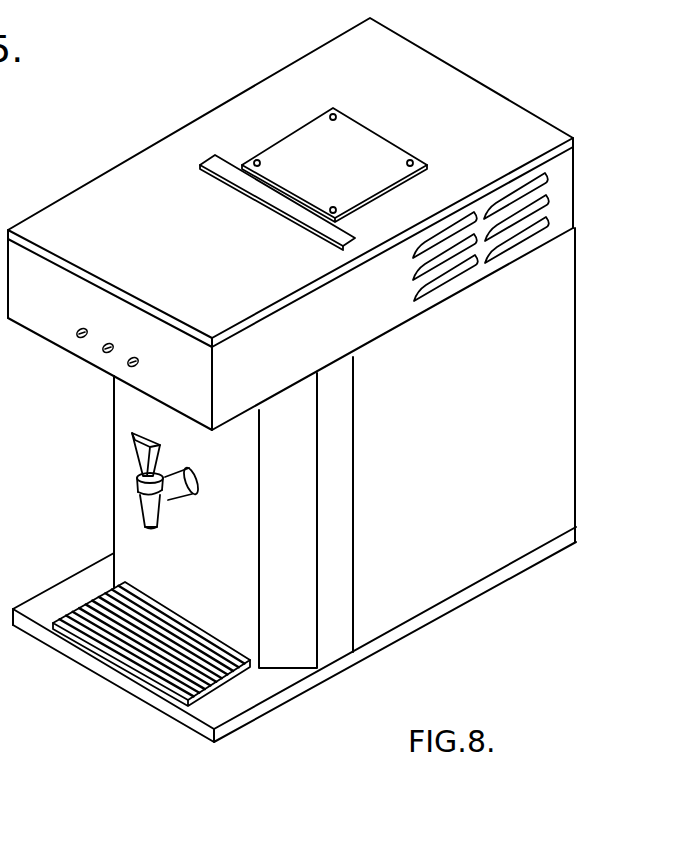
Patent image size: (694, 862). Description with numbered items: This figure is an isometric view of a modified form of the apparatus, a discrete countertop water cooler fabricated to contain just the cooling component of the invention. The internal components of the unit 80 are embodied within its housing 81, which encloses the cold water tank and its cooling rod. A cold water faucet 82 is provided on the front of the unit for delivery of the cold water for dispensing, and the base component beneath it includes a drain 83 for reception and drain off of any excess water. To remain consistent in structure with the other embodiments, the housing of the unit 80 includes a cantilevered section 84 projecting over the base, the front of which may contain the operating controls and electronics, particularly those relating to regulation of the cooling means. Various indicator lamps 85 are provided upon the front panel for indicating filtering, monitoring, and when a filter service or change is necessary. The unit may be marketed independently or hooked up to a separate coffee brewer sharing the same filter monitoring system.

The unit 80 is at (558, 126).
The housing 81 is at (540, 316).
The cold water faucet 82 is at (160, 508).
The drain 83 is at (130, 637).
The cantilevered section 84 is at (106, 197).
The indicator lamps 85 is at (103, 327).